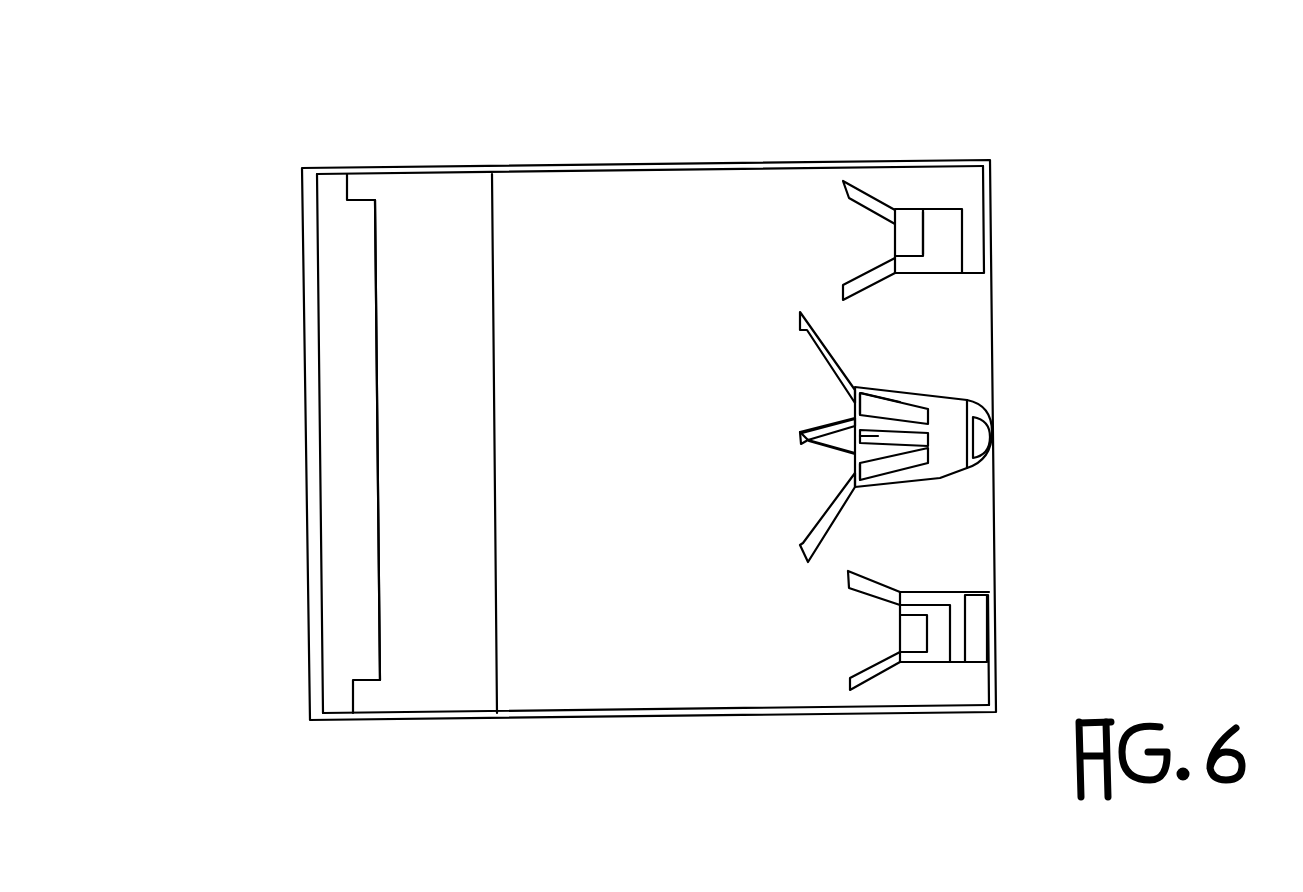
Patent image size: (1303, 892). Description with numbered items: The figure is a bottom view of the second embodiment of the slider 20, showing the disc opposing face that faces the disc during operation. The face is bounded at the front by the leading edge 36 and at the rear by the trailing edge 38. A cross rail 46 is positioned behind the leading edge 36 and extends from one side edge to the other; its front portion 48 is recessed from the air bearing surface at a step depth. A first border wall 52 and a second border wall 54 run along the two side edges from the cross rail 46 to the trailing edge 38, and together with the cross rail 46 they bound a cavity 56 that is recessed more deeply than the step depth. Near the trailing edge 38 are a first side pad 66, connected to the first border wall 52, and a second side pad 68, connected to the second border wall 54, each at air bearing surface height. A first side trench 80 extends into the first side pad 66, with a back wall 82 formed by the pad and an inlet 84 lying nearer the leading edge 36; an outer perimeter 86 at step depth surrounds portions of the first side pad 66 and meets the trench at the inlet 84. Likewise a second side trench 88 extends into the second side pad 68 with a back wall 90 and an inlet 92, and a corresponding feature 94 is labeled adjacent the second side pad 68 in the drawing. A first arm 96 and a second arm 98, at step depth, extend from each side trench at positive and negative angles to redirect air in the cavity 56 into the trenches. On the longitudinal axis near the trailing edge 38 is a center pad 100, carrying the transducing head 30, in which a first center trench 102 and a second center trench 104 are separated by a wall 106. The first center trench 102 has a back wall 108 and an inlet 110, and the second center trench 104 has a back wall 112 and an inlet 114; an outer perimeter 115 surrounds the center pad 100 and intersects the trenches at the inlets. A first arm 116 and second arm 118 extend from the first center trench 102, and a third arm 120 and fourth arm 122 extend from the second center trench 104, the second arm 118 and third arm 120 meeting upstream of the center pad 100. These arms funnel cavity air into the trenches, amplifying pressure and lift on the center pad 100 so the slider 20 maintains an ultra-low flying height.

The slider 20 is at (625, 367).
The transducing head 30 is at (987, 422).
The leading edge 36 is at (303, 308).
The trailing edge 38 is at (990, 318).
The cross rail 46 is at (495, 728).
The front portion 48 is at (338, 597).
The first border wall 52 is at (560, 163).
The second border wall 54 is at (662, 716).
The cavity 56 is at (528, 200).
The first side pad 66 is at (950, 228).
The second side pad 68 is at (935, 627).
The first side trench 80 is at (912, 225).
The back wall 82 is at (925, 226).
The inlet 84 is at (895, 228).
The outer perimeter 86 is at (930, 274).
The second side trench 88 is at (917, 642).
The back wall 90 is at (936, 642).
The inlet 92 is at (898, 618).
The mounting plate 94 is at (927, 597).
The first arm 96 is at (848, 193).
The second arm 98 is at (858, 283).
The center pad 100 is at (968, 402).
The first center trench 102 is at (880, 418).
The second center trench 104 is at (910, 447).
The wall 106 is at (802, 435).
The back wall 108 is at (948, 418).
The inlet 110 is at (862, 410).
The back wall 112 is at (930, 440).
The inlet 114 is at (855, 458).
The outer perimeter 115 is at (872, 390).
The first arm 116 is at (797, 330).
The second arm 118 is at (810, 425).
The third arm 120 is at (800, 443).
The fourth arm 122 is at (803, 540).